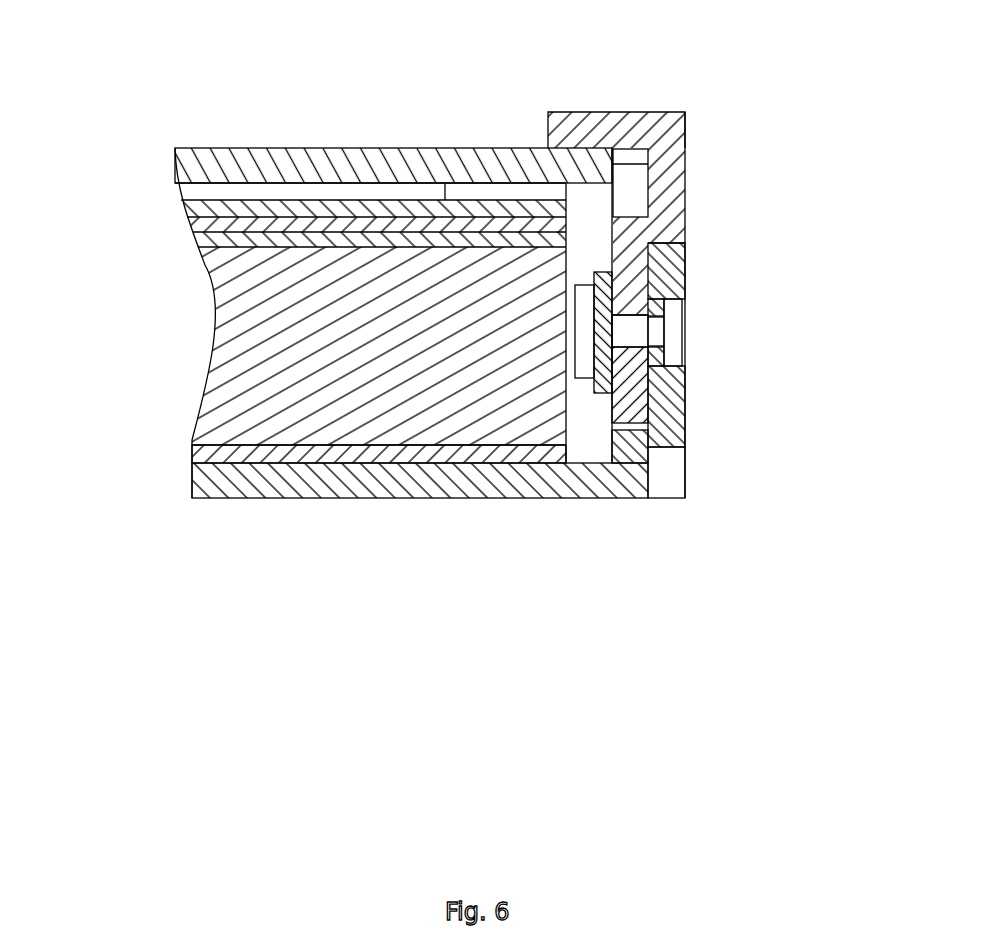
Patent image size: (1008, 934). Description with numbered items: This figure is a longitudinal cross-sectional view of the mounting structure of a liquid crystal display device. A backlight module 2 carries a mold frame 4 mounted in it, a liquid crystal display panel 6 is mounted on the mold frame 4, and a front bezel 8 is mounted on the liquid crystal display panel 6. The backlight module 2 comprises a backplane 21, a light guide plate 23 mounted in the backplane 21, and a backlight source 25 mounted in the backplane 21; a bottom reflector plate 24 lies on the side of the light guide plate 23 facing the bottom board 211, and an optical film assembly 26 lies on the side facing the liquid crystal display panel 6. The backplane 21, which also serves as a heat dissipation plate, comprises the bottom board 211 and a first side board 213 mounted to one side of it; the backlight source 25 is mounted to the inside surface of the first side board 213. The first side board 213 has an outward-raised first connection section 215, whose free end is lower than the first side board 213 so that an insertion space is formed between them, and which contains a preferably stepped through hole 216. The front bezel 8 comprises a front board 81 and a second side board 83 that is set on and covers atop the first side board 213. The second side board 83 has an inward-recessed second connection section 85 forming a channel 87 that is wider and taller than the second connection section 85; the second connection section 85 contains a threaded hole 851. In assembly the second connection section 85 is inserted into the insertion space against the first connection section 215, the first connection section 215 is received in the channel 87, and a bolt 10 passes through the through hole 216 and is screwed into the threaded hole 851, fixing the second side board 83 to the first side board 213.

The backlight module 2 is at (293, 336).
The mold frame 4 is at (587, 205).
The liquid crystal display panel 6 is at (257, 170).
The front bezel 8 is at (668, 133).
The bolt 10 is at (663, 337).
The backplane 21 is at (618, 482).
The light guide plate 23 is at (237, 402).
The bottom reflector plate 24 is at (507, 458).
The backlight source 25 is at (584, 372).
The optical film assembly 26 is at (232, 232).
The front board 81 is at (567, 128).
The second side board 83 is at (670, 187).
The second connection section 85 is at (665, 403).
The channel 87 is at (667, 465).
The bottom board 211 is at (348, 487).
The first side board 213 is at (650, 467).
The first connection section 215 is at (665, 268).
The through hole 216 is at (668, 362).
The threaded hole 851 is at (650, 308).